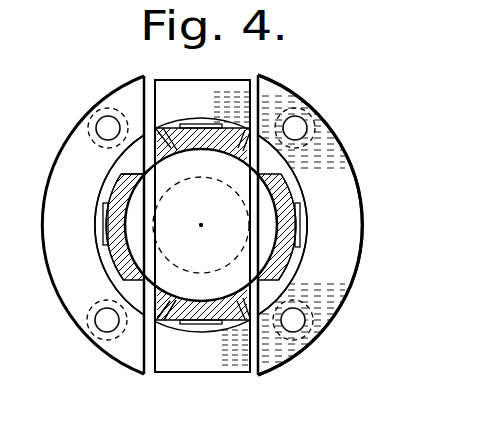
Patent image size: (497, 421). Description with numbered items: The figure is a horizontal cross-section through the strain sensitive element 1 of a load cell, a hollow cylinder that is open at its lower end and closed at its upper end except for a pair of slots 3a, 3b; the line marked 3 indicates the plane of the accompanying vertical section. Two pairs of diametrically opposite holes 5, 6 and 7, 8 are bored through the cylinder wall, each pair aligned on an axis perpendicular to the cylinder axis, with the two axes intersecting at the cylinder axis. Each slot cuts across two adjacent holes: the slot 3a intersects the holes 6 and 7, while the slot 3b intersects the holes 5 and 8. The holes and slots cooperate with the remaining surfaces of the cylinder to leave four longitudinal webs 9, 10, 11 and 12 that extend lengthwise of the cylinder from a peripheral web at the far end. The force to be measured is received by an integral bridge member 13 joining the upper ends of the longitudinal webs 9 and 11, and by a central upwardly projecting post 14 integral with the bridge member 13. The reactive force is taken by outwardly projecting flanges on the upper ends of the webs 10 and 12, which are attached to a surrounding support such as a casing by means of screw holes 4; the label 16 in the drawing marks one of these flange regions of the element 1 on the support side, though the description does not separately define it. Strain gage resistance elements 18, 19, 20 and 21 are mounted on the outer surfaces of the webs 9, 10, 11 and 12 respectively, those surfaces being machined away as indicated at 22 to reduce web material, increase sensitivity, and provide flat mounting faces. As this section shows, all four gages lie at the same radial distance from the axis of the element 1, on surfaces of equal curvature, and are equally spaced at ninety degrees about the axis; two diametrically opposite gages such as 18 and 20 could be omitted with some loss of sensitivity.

The strain sensitive element 1 is at (338, 331).
The section line 3- 3 is at (53, 224).
The slot 3a is at (145, 75).
The slot 3b is at (256, 80).
The screw holes 4 is at (300, 126).
The hole 5 is at (343, 299).
The hole 6 is at (110, 187).
The hole 7 is at (165, 312).
The hole 8 is at (289, 167).
The longitudinal web 9 is at (231, 327).
The longitudinal web 10 is at (101, 260).
The longitudinal web 11 is at (230, 128).
The longitudinal web 12 is at (294, 197).
The bridge member 13 is at (167, 358).
The post 14 is at (202, 177).
The housing cavity 16 is at (348, 273).
The strain gage resistance element 18 is at (203, 325).
The strain gage resistance element 19 is at (103, 207).
The strain gage resistance element 20 is at (195, 124).
The strain gage resistance element 21 is at (299, 241).
The machined-away surface 22 is at (104, 246).